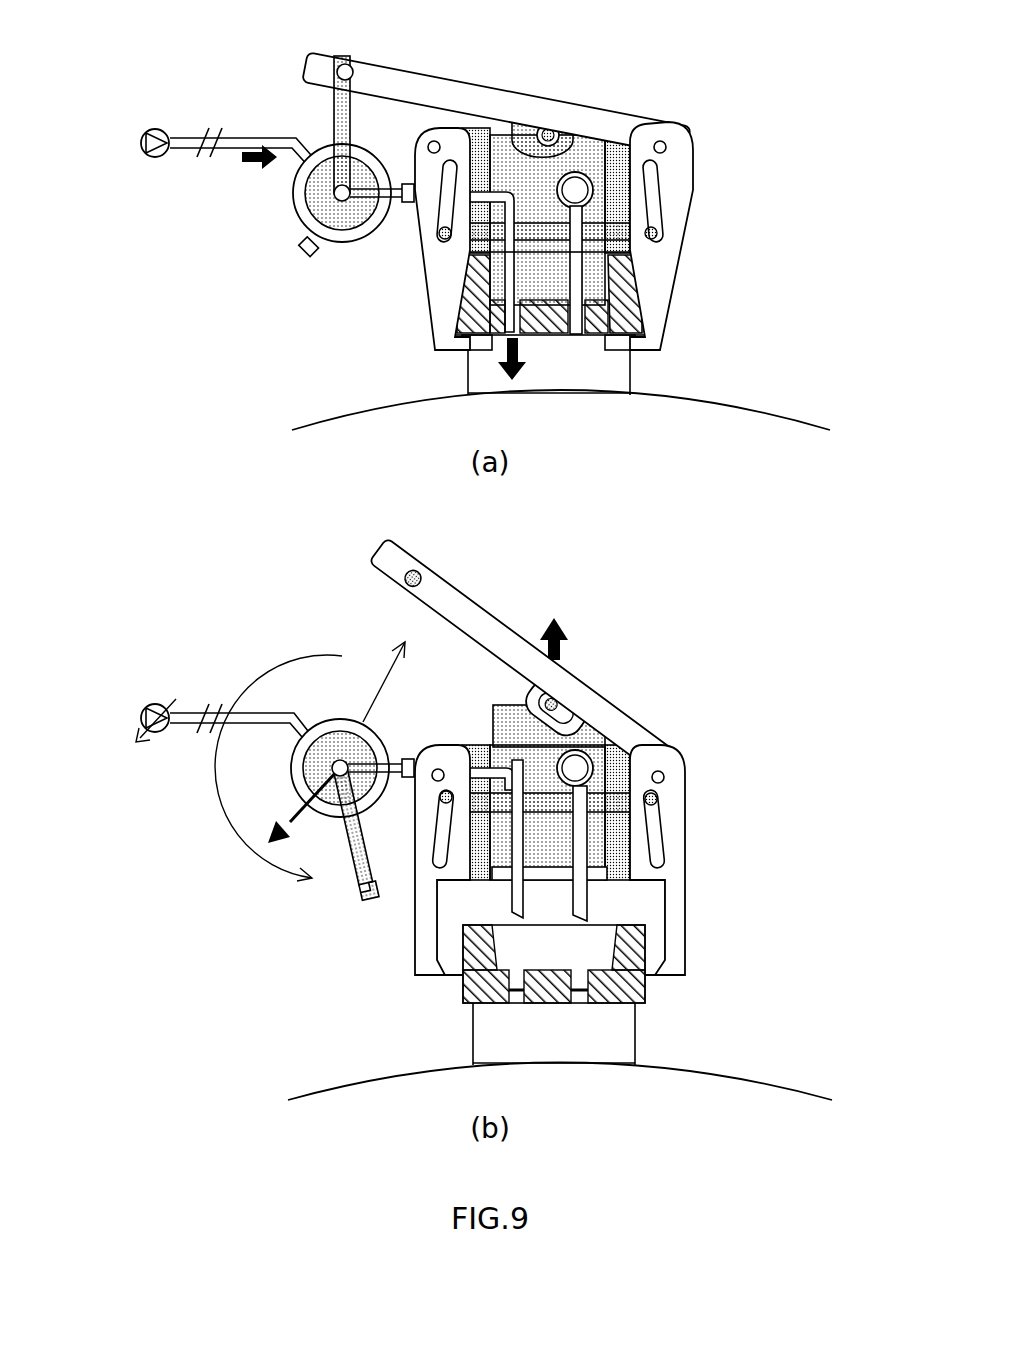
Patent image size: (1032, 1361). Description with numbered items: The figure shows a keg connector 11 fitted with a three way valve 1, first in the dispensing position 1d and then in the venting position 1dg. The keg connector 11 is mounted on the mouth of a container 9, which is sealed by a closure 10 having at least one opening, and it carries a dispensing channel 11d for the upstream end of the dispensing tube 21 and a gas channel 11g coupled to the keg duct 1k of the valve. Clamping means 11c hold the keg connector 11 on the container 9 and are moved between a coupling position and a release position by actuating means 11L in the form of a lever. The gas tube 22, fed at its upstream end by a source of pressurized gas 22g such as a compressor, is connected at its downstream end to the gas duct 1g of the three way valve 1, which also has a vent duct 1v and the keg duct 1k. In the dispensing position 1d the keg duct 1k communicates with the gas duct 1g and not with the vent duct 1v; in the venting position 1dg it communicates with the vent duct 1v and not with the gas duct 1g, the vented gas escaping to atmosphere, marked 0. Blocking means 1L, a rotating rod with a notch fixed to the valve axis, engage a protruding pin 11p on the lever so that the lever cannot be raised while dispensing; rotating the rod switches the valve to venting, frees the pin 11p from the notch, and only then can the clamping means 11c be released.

The zero point 0 is at (145, 730).
The three way valve 1 is at (357, 246).
The gas duct 1g is at (298, 140).
The blocking means 1L is at (352, 126).
The vent duct 1v is at (305, 250).
The keg duct 1k is at (408, 207).
The dispensing position 1d is at (258, 225).
The venting position 1dg is at (236, 836).
The container 9 is at (712, 403).
The closure 10 is at (645, 268).
The keg connector 11 is at (728, 172).
The actuating means 11L is at (500, 107).
The coupling element 11p is at (354, 74).
The clamping means 11c is at (447, 347).
The dispensing channel 11d is at (582, 292).
The gas channel 11g is at (513, 298).
The dispensing tube 21 is at (578, 160).
The gas tube 22 is at (246, 136).
The source of pressurized gas 22g is at (158, 160).